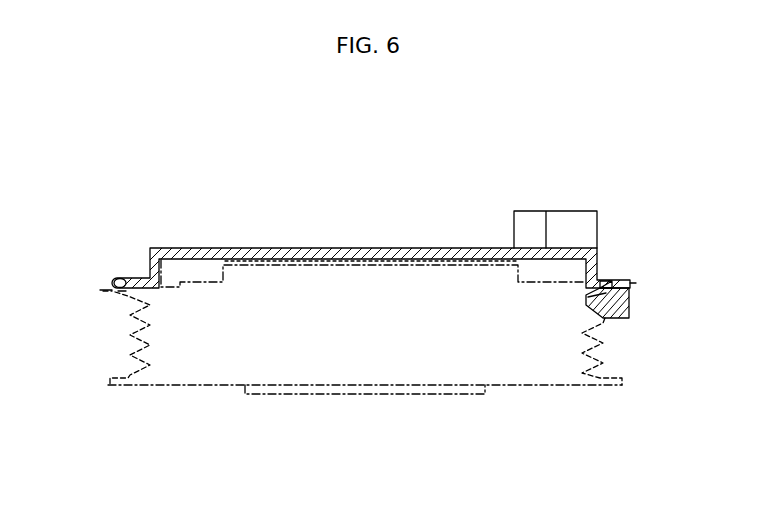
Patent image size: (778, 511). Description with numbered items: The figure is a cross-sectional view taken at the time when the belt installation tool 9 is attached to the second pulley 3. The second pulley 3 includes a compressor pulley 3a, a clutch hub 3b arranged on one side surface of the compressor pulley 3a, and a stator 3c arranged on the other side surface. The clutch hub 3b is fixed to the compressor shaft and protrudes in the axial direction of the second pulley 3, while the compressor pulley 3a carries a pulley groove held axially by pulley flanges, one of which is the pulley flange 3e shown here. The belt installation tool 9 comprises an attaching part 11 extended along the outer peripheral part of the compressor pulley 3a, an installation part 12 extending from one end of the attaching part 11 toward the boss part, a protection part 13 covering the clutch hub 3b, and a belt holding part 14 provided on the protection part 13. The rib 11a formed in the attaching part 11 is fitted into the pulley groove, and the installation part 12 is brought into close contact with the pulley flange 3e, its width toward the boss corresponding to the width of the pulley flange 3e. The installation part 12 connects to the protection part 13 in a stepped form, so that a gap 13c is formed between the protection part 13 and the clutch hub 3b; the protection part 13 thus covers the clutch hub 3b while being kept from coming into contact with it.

The second pulley 3 is at (138, 405).
The compressor pulley 3a is at (117, 334).
The clutch hub 3b is at (226, 275).
The stator 3c is at (450, 397).
The pulley flange 3e is at (115, 286).
The belt installation tool 9 is at (148, 228).
The attaching part 11 is at (630, 305).
The rib 11a is at (600, 302).
The installation part 12 is at (125, 280).
The protection part 13 is at (393, 248).
The gap 13c is at (302, 262).
The belt holding part 14 is at (567, 211).